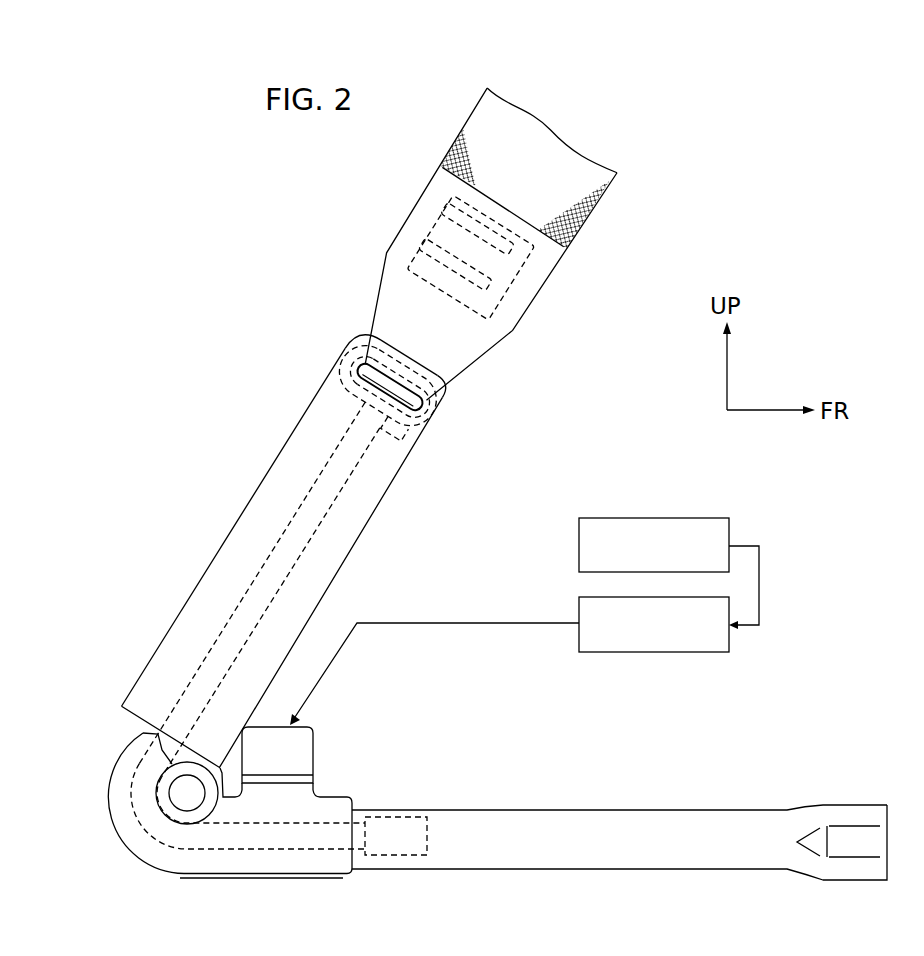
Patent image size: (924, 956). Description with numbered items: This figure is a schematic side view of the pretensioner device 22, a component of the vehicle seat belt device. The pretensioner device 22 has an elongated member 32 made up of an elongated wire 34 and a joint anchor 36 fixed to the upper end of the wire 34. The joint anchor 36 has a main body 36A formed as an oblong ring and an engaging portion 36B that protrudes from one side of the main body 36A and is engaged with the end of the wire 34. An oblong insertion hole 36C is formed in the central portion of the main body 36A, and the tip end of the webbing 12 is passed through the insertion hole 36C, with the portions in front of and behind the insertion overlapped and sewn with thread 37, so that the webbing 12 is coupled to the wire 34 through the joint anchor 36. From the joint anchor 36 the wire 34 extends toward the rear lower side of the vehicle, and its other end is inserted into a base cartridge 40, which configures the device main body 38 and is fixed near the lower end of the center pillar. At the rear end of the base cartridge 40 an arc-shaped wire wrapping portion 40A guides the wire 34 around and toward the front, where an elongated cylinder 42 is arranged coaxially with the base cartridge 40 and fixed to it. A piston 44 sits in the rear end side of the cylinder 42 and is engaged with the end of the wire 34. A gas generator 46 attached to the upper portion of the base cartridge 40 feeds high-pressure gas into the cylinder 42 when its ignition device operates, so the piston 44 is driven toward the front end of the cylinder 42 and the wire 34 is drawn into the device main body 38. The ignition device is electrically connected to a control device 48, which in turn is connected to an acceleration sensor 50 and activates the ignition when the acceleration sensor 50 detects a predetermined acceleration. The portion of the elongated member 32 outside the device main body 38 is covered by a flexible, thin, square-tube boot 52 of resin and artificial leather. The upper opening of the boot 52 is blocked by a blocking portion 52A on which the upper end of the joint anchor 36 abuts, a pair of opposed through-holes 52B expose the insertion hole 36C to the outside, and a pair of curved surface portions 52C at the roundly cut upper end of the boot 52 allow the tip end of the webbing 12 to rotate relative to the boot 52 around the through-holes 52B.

The webbing 12 is at (587, 213).
The thread 37 is at (428, 232).
The boot 52 is at (200, 577).
The curved surface portions 52C is at (367, 342).
The blocking portion 52A is at (407, 355).
The through-holes 52B is at (428, 400).
The joint anchor 36 is at (348, 380).
The insertion hole 36C is at (358, 370).
The main body 36A is at (413, 432).
The engaging portion 36B is at (413, 468).
The wire 34 is at (300, 503).
The elongated member 32 is at (205, 367).
The pretensioner device 22 is at (104, 437).
The base cartridge 40 is at (230, 874).
The wire wrapping portion 40A is at (160, 812).
The gas generator 46 is at (317, 752).
The piston 44 is at (405, 817).
The device main body 38 is at (533, 806).
The cylinder 42 is at (670, 810).
The acceleration sensor 50 is at (579, 540).
The control device 48 is at (579, 606).